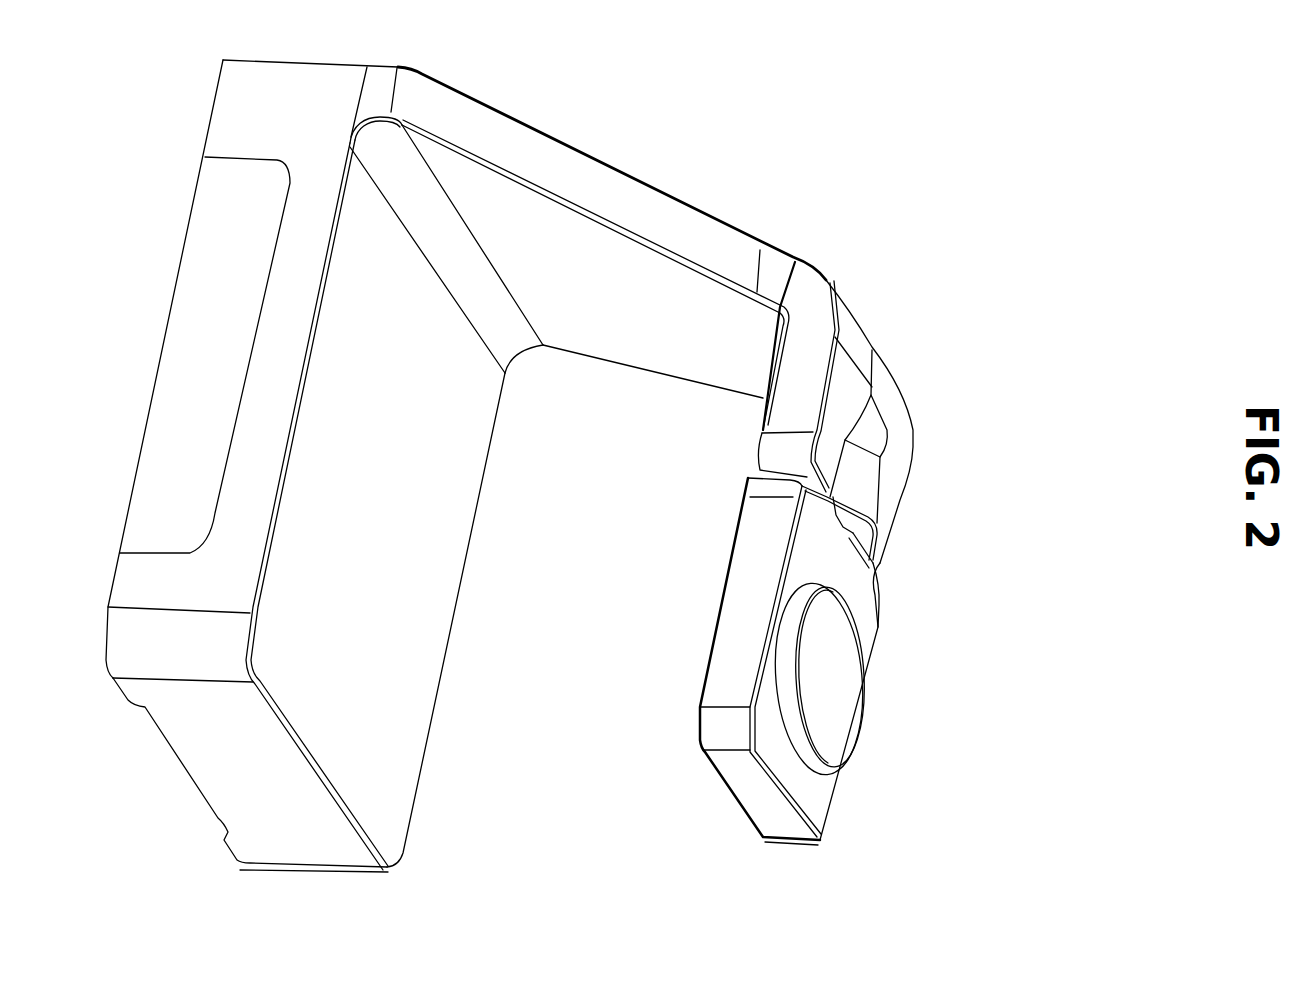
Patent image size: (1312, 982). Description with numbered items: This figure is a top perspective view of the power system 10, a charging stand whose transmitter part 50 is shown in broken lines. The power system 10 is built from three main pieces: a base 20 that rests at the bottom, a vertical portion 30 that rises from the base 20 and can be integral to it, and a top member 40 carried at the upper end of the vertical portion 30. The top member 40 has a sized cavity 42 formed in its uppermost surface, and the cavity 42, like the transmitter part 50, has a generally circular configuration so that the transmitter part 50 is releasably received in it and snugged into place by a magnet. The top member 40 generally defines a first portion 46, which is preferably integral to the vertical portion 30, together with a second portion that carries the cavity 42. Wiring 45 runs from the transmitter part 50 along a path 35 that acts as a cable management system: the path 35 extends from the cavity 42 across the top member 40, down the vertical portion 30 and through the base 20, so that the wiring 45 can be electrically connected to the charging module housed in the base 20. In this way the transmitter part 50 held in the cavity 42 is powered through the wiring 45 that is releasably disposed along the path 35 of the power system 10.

The power system 10 is at (932, 632).
The base 20 is at (220, 128).
The vertical portion 30 is at (605, 178).
The path 35 is at (870, 353).
The top member 40 is at (893, 527).
The cavity 42 is at (803, 770).
The wiring 45 is at (867, 623).
The first portion 46 is at (895, 453).
The transmitter part 50 is at (840, 737).